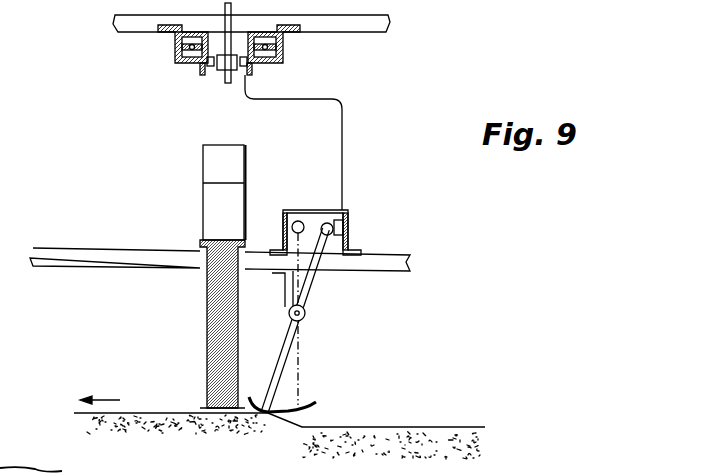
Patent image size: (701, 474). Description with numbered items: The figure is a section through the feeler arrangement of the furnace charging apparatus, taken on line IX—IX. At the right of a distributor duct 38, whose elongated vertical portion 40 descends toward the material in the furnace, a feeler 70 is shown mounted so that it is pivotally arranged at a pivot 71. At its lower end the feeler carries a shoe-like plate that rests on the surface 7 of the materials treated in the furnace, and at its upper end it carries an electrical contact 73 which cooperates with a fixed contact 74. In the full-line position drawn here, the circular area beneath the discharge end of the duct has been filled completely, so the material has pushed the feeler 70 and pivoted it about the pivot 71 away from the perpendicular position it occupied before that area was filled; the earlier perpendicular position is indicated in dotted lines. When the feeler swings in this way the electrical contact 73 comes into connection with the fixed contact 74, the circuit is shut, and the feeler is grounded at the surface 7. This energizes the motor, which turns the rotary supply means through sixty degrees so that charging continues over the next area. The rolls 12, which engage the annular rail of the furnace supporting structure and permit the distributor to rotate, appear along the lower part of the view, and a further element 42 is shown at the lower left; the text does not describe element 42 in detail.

The surface of the materials 7 is at (178, 413).
The rolls 12 is at (268, 414).
The distributor duct 38 is at (212, 160).
The vertical portion of distributor duct 40 is at (200, 348).
The ground element 42 is at (56, 457).
The feeler 70 is at (277, 360).
The pivot 71 is at (306, 313).
The electrical contact 73 is at (329, 222).
The fixed contact 74 is at (344, 228).